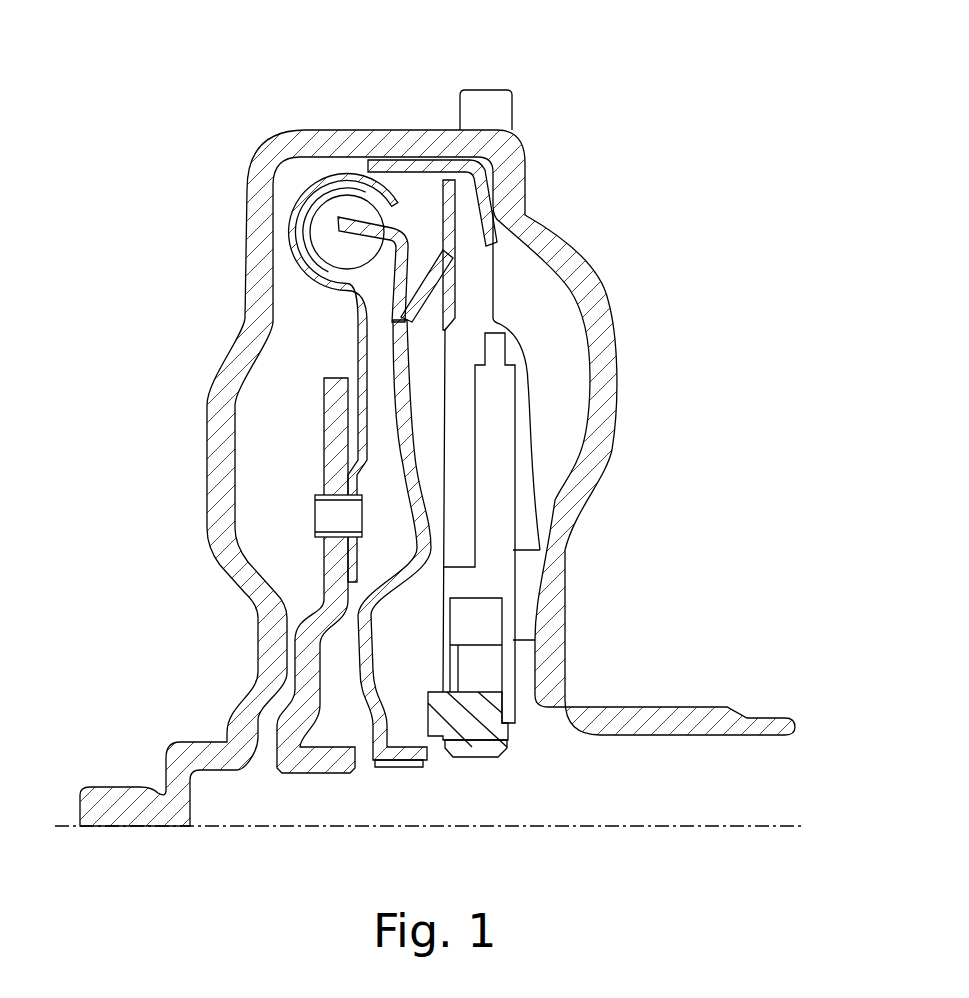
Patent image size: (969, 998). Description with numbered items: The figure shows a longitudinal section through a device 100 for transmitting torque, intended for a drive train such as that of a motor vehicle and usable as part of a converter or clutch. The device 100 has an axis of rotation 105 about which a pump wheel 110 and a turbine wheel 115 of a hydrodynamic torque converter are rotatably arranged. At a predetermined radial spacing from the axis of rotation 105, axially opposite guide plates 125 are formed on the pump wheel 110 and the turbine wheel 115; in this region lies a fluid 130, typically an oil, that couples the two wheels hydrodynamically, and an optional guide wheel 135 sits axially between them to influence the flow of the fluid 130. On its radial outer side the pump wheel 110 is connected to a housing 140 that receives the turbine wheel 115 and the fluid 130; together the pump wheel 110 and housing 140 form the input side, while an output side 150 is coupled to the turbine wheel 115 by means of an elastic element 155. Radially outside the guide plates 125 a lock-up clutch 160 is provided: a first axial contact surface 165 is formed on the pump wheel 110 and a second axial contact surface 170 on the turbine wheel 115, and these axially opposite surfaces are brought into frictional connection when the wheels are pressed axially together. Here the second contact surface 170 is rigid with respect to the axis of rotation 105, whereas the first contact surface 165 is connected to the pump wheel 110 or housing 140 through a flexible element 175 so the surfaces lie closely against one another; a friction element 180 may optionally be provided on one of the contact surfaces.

The device for transmitting torque 100 is at (460, 426).
The axis of rotation 105 is at (800, 826).
The pump wheel 110 is at (437, 458).
The turbine wheel 115 is at (413, 313).
The guide plates 125 is at (420, 418).
The fluid 130 is at (300, 343).
The guide wheel 135 is at (492, 443).
The housing 140 is at (437, 458).
The output side 150 is at (288, 723).
The elastic element 155 is at (310, 233).
The lock-up clutch 160 is at (437, 458).
The first axial contact surface 165 is at (466, 207).
The second axial contact surface 170 is at (458, 223).
The flexible element 175 is at (468, 136).
The friction element 180 is at (478, 198).